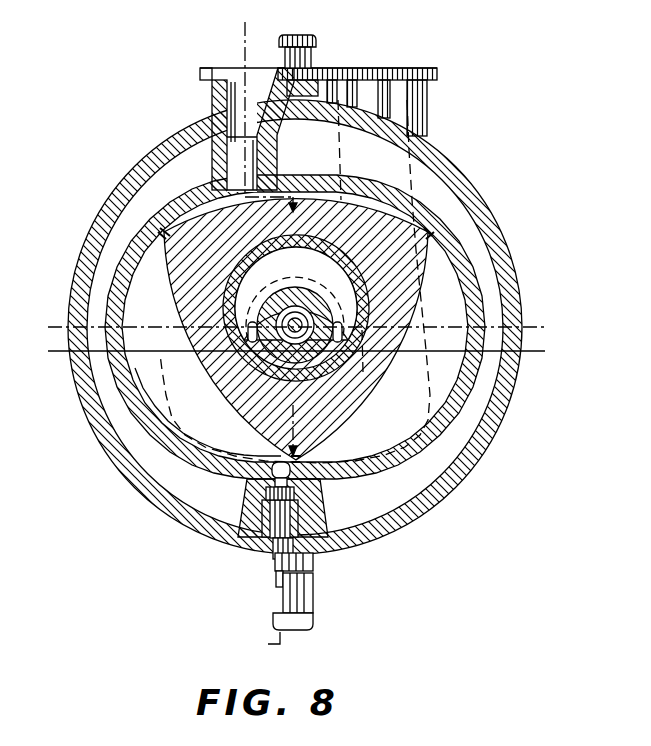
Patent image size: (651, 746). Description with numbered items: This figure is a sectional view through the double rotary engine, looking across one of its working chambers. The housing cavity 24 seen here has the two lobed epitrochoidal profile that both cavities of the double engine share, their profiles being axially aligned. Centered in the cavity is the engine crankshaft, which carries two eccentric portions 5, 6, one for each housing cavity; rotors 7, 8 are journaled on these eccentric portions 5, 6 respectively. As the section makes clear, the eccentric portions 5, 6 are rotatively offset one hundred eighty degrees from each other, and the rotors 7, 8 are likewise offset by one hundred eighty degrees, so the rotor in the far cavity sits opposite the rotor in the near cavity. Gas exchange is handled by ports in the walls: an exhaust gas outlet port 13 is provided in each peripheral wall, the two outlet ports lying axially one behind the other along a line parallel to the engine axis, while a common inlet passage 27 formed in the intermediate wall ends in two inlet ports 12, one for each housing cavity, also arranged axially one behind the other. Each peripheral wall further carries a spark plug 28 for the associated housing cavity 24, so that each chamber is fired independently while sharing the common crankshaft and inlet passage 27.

The eccentric portion 5 is at (250, 408).
The eccentric portion 6 is at (262, 359).
The rotor 7 is at (228, 20).
The rotor 8 is at (167, 265).
The inlet port 12 is at (410, 190).
The exhaust gas outlet port 13 is at (238, 68).
The housing cavity 24 is at (452, 307).
The common inlet passage 27 is at (382, 84).
The spark plug 28 is at (277, 548).